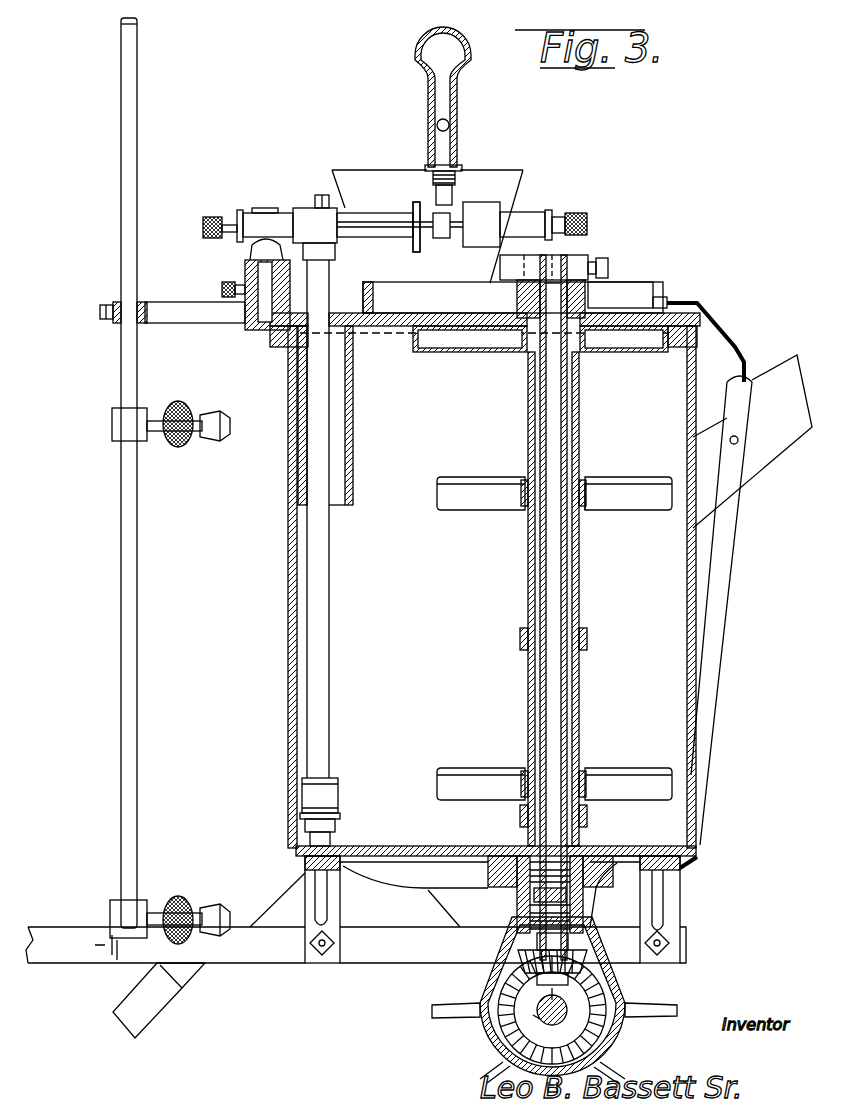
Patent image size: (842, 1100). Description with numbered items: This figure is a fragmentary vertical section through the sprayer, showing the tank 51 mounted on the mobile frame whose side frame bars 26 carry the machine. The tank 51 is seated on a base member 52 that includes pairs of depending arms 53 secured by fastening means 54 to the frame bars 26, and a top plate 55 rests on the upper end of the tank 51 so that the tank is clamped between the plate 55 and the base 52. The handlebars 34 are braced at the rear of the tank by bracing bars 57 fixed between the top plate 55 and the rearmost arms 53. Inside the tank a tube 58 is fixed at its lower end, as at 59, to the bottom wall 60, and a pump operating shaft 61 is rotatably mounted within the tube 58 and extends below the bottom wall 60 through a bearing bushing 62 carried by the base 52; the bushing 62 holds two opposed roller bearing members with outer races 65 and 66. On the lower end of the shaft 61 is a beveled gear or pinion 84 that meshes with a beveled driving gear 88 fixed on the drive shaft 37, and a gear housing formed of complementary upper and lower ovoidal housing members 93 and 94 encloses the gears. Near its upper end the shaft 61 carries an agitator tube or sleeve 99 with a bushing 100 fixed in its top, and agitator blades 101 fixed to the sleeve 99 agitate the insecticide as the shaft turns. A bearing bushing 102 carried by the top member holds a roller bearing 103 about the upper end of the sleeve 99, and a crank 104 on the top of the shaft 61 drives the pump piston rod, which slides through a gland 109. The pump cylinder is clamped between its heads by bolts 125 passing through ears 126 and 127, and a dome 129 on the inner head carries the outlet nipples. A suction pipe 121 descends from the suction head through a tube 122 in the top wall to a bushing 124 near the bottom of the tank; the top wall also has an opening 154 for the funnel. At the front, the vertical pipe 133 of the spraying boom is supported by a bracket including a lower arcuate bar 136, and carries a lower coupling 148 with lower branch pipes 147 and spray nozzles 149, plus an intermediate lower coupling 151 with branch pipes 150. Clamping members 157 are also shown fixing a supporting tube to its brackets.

The frame bars 26 is at (245, 948).
The handlebars 34 is at (773, 447).
The drive shaft 37 is at (525, 1030).
The tank 51 is at (288, 573).
The base member 52 is at (388, 855).
The depending arms 53 is at (335, 912).
The fastening means 54 is at (318, 954).
The top plate 55 is at (648, 280).
The bracing bars 57 is at (750, 378).
The tube 58 is at (547, 720).
The lower end fixing of tube 59 is at (565, 852).
The bottom wall 60 is at (625, 862).
The pump operating shaft 61 is at (553, 703).
The bearing bushing 62 is at (517, 898).
The outer race 65 is at (592, 893).
The outer race 66 is at (500, 913).
The beveled gear or pinion 84 is at (500, 948).
The beveled driving gear 88 is at (552, 1012).
The upper housing member 93 is at (623, 995).
The lower housing member 94 is at (622, 1040).
The agitator tube or sleeve 99 is at (577, 423).
The bushing 100 is at (565, 292).
The agitator blades 101 is at (610, 483).
The bearing bushing 102 is at (590, 300).
The roller bearing 103 is at (517, 298).
The crank 104 is at (490, 283).
The gland 109 is at (490, 198).
The pipe 121 is at (320, 665).
The tube 122 is at (355, 447).
The bushing 124 is at (332, 793).
The bolts 125 is at (365, 200).
The ears 126 is at (442, 235).
The ears 127 is at (320, 223).
The dome 129 is at (455, 115).
The vertically disposed pipe 133 is at (138, 612).
The lower arcuate bar 136 is at (177, 317).
The lower branch pipes 147 is at (153, 912).
The lower coupling 148 is at (110, 902).
The spray nozzles 149 is at (192, 903).
The branch pipes 150 is at (158, 432).
The intermediate lower coupling 151 is at (115, 425).
The opening 154 is at (185, 445).
The clamping members 157 is at (117, 328).